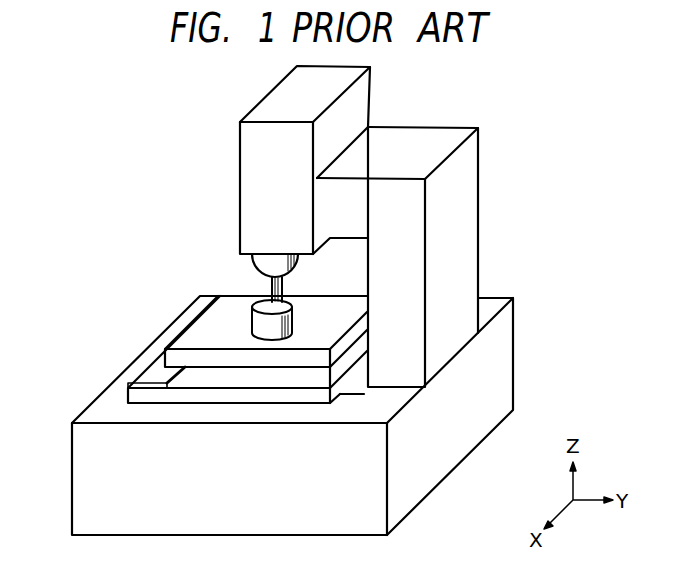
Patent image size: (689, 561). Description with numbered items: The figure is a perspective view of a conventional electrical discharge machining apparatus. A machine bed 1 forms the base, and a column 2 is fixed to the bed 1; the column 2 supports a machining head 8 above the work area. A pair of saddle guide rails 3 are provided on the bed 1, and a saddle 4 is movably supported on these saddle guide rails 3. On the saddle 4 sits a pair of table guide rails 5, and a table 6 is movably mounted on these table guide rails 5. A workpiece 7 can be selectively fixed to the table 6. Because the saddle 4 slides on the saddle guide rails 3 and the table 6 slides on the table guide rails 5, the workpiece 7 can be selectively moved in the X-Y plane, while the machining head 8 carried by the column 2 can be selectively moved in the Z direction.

The machine bed 1 is at (498, 367).
The column 2 is at (462, 249).
The saddle guide rails 3 is at (127, 390).
The saddle 4 is at (130, 386).
The table guide rails 5 is at (178, 369).
The table 6 is at (192, 337).
The workpiece 7 is at (253, 325).
The machining head 8 is at (271, 290).